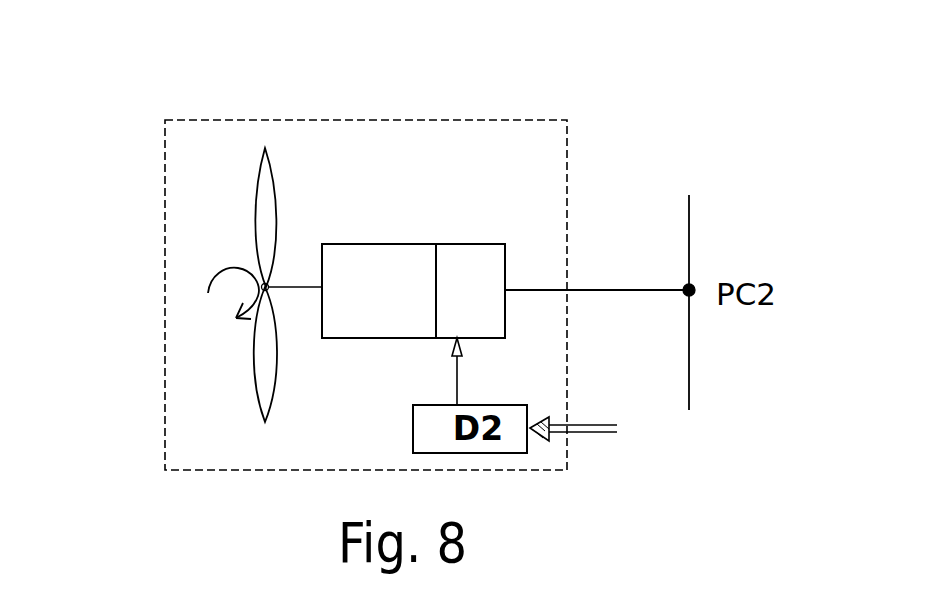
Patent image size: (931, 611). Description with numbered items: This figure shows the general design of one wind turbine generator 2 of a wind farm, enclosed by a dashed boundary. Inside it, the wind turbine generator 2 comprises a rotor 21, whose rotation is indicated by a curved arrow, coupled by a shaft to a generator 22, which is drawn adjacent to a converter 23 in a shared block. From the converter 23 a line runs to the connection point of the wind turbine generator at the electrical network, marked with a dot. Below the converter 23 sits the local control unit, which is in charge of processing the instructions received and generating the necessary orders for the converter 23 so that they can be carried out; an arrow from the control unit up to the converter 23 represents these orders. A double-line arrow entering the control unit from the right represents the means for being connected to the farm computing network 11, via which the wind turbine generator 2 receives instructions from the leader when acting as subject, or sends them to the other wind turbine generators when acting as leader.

The wind turbine generator 2 is at (366, 295).
The rotor 21 is at (253, 244).
The generator 22 is at (381, 262).
The converter 23 is at (455, 257).
The farm computing network 11 is at (594, 428).